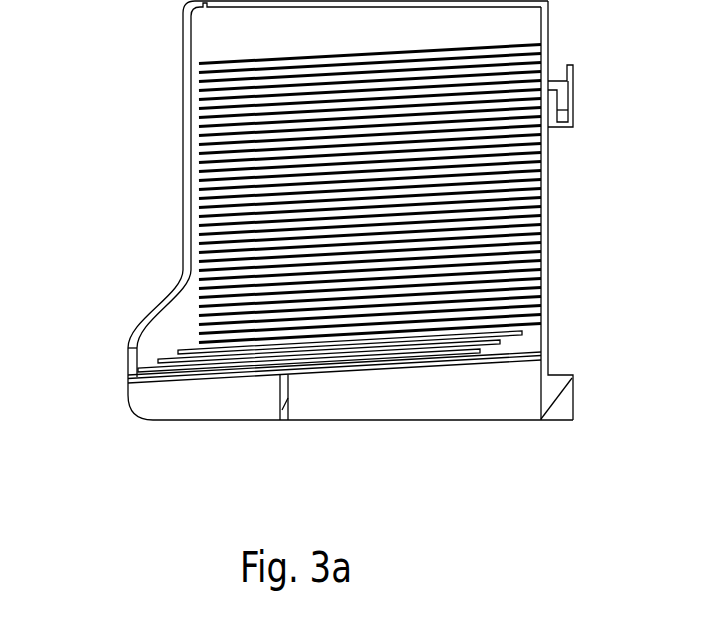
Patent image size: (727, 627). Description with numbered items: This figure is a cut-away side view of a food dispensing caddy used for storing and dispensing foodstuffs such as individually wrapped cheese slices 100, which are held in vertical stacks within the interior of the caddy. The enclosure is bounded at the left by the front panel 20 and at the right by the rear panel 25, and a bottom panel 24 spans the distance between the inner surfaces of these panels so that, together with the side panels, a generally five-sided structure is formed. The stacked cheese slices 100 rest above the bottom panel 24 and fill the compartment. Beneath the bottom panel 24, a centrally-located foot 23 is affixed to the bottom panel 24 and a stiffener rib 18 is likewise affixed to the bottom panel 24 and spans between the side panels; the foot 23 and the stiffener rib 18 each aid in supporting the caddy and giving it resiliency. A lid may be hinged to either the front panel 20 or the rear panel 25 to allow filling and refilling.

The front panel 20 is at (183, 157).
The individually wrapped cheese slices 100 is at (215, 198).
The rear panel 25 is at (548, 260).
The stiffener rib 18 is at (280, 397).
The bottom panel 24 is at (393, 367).
The foot 23 is at (483, 403).